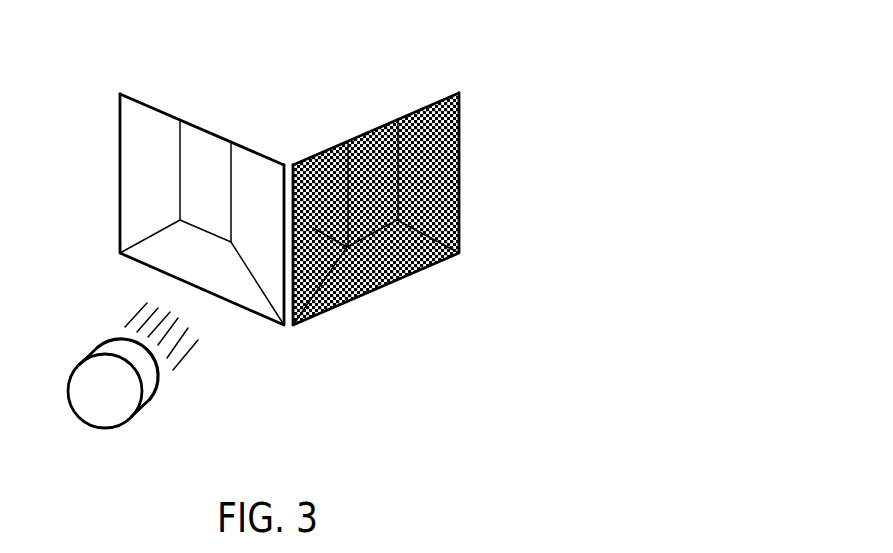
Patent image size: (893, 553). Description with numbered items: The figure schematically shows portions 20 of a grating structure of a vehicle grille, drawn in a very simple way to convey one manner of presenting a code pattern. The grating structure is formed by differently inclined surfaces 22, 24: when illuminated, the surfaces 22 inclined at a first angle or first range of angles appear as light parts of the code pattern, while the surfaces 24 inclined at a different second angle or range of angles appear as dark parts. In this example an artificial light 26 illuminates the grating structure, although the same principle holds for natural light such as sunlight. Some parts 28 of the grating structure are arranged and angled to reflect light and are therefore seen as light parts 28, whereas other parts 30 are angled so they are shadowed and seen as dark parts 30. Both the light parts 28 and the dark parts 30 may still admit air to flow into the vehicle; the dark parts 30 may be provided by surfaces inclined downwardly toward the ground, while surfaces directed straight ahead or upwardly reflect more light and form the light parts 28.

The portions of a grating structure 20 is at (486, 51).
The surfaces inclined at a first angle 22 is at (268, 242).
The surfaces inclined at a second angle 24 is at (360, 297).
The artificial light 26 is at (157, 400).
The light parts 28 is at (207, 132).
The dark parts 30 is at (362, 135).